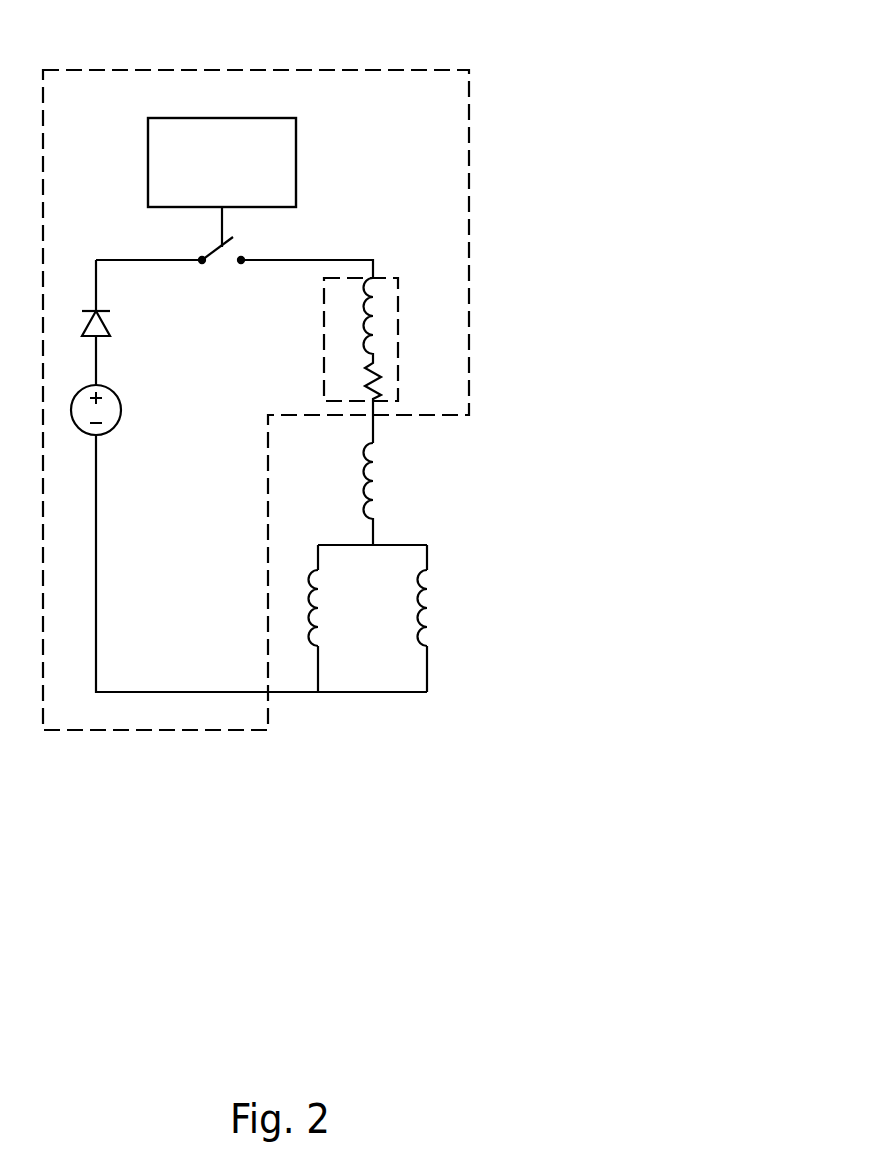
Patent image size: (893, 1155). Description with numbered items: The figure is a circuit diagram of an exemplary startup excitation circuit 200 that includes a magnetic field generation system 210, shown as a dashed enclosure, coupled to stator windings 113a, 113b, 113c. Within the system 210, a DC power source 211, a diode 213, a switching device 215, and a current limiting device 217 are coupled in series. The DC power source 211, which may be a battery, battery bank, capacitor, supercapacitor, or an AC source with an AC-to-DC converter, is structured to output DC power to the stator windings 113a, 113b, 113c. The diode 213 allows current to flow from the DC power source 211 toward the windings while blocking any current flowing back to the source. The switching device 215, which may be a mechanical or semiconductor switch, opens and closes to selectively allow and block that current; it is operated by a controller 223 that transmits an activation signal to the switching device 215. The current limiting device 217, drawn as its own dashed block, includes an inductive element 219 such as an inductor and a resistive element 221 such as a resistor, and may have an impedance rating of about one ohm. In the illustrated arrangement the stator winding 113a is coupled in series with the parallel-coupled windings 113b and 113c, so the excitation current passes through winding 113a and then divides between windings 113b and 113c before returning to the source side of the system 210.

The startup excitation circuit 200 is at (528, 91).
The magnetic field generation system 210 is at (470, 148).
The controller 223 is at (297, 148).
The switching device 215 is at (216, 255).
The diode 213 is at (110, 326).
The DC power source 211 is at (121, 407).
The current limiting device 217 is at (393, 277).
The inductive element 219 is at (378, 312).
The resistive element 221 is at (378, 372).
The stator winding 113a is at (378, 470).
The stator winding 113b is at (323, 598).
The stator winding 113c is at (432, 598).